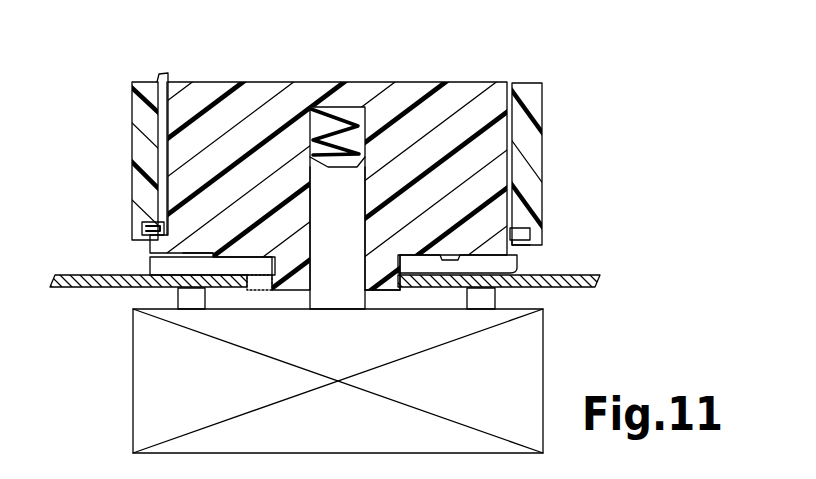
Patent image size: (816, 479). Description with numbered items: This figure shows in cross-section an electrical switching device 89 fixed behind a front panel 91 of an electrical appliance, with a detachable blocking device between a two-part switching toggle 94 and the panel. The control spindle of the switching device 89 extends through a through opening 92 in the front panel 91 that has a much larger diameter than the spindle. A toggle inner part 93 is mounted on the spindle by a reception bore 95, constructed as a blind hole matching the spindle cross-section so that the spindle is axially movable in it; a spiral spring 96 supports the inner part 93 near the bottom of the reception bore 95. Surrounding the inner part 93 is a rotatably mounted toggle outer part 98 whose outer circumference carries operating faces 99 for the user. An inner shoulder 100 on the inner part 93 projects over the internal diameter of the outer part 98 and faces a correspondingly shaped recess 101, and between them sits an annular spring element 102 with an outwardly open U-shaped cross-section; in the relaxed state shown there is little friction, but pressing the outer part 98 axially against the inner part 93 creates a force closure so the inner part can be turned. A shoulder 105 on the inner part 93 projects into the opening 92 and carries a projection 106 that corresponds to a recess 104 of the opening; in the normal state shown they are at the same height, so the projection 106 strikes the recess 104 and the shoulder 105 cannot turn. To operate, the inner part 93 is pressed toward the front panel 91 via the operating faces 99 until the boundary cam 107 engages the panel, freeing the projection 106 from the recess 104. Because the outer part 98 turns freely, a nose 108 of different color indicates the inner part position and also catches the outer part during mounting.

The electrical switching device 89 is at (357, 432).
The front panel 91 is at (57, 275).
The through opening 92 is at (400, 291).
The toggle inner part 93 is at (272, 82).
The switching toggle 94 is at (104, 71).
The reception bore 95 is at (368, 125).
The spiral spring 96 is at (352, 135).
The toggle outer part 98 is at (346, 137).
The operating faces 99 is at (132, 152).
The inner shoulder 100 is at (148, 254).
The recess 101 is at (148, 228).
The annular spring element 102 is at (143, 232).
The recess 104 is at (247, 290).
The shoulder 105 is at (377, 291).
The projection 106 is at (258, 292).
The boundary cam 107 is at (213, 253).
The nose 108 is at (165, 75).